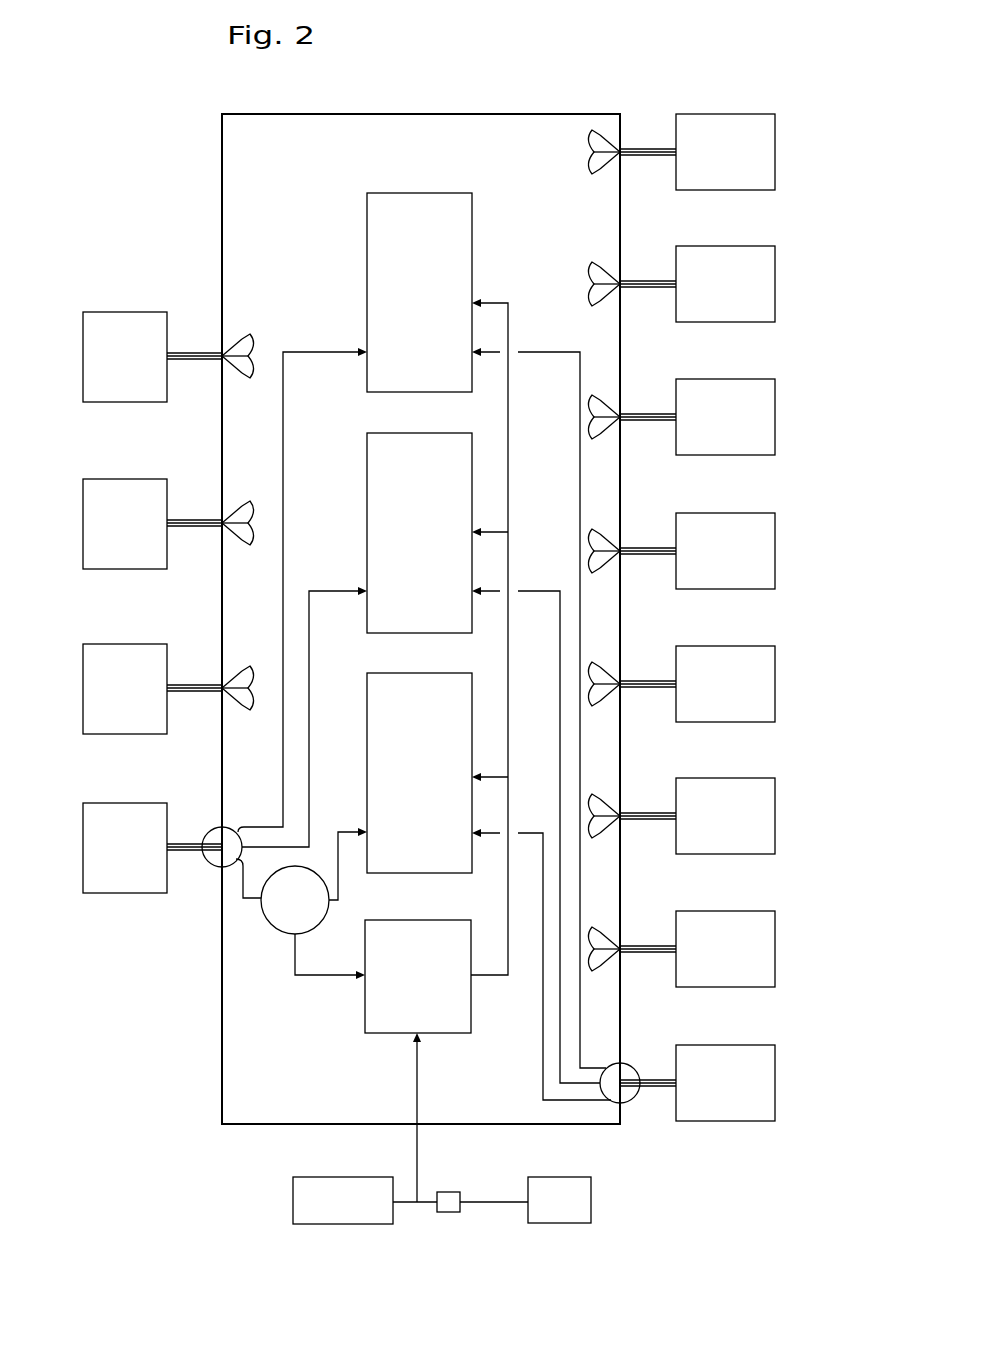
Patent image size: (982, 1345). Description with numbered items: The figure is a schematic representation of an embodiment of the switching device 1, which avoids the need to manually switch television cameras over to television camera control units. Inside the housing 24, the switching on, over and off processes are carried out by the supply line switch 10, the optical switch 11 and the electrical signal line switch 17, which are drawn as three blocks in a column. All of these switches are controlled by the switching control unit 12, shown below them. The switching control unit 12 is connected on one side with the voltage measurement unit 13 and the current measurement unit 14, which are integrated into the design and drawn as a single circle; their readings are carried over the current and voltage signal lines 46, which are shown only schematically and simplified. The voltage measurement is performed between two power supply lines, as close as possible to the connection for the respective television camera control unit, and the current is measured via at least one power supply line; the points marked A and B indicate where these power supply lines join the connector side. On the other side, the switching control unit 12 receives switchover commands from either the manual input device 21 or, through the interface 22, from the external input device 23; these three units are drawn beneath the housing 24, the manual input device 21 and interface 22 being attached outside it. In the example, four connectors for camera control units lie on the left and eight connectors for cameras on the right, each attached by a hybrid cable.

The switching device 1 is at (485, 114).
The supply line switch 10 is at (378, 697).
The optical switch 11 is at (377, 460).
The switching control unit 12 is at (388, 1020).
The voltage measurement unit 13 is at (242, 965).
The current measurement unit 14 is at (283, 913).
The electrical signal line switch 17 is at (372, 220).
The manual input device 21 is at (308, 1208).
The interface 22 is at (453, 1205).
The external input device 23 is at (578, 1213).
The housing 24 is at (250, 1125).
The current and voltage signal line 46 is at (320, 978).
The distribution point A is at (186, 907).
The distribution point B is at (624, 1126).